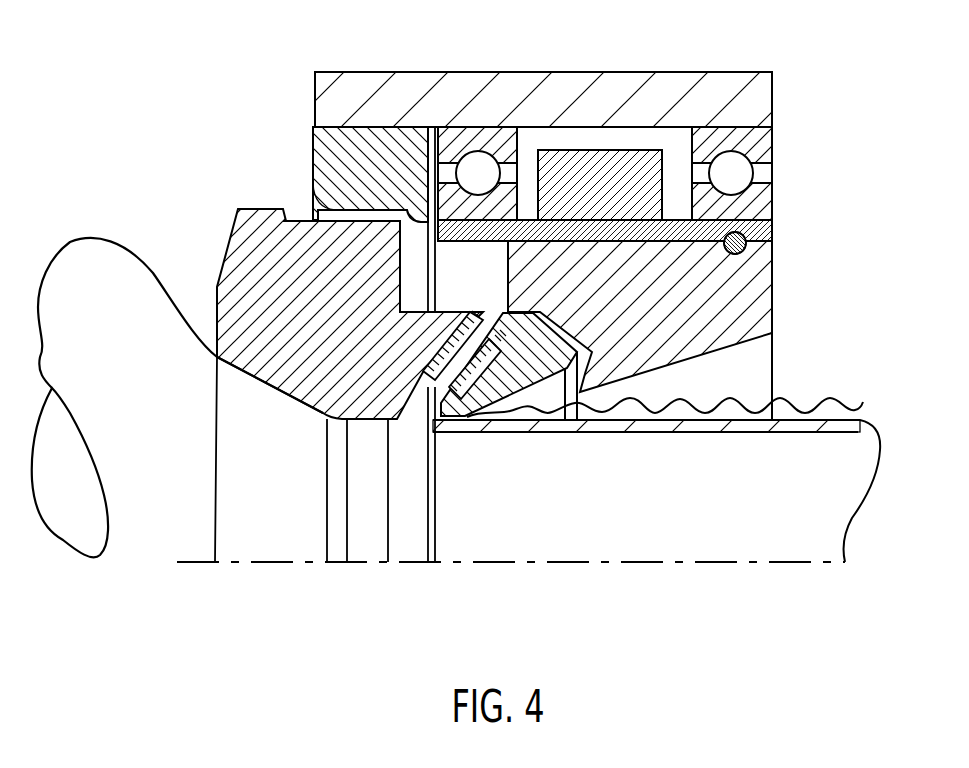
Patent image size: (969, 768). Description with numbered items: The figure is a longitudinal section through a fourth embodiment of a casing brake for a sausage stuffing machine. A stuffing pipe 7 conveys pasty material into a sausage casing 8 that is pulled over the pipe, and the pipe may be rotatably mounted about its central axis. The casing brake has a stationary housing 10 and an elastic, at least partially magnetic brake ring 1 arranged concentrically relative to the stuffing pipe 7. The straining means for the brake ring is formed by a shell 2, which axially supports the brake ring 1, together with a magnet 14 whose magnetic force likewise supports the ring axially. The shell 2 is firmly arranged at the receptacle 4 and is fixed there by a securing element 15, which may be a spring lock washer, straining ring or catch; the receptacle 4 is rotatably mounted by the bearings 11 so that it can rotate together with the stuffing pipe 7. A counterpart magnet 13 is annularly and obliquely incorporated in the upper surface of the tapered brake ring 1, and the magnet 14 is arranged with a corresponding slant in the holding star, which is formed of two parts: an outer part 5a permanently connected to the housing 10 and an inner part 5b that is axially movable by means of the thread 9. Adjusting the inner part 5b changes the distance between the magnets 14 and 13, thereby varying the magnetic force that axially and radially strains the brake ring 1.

The brake ring 1 is at (530, 380).
The shell 2 is at (652, 333).
The receptacle 4 is at (592, 203).
The outer part 5a is at (363, 185).
The inner part 5b is at (305, 317).
The stuffing pipe 7 is at (838, 517).
The sausage casing 8 is at (836, 401).
The thread 9 is at (312, 183).
The housing 10 is at (603, 90).
The bearings 11 is at (472, 140).
The magnet 13 is at (490, 400).
The magnet 14 is at (446, 352).
The securing element 15 is at (748, 246).